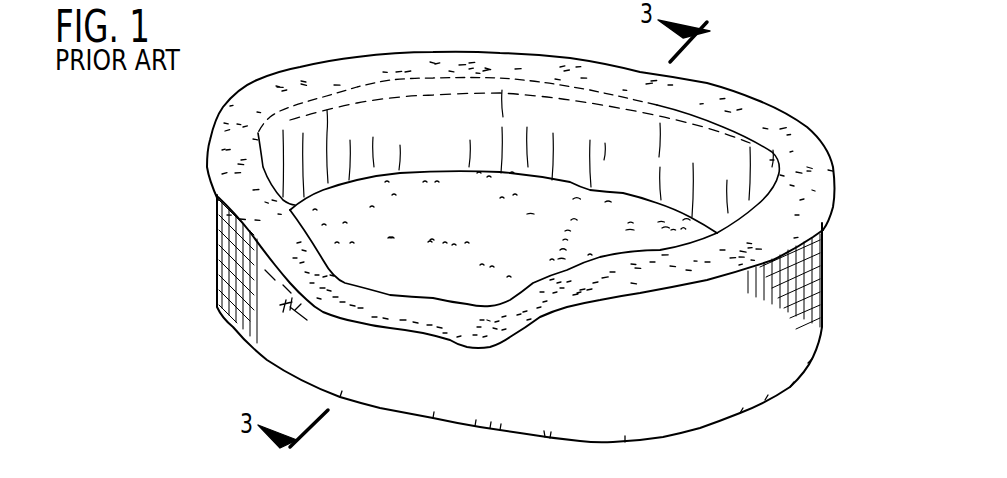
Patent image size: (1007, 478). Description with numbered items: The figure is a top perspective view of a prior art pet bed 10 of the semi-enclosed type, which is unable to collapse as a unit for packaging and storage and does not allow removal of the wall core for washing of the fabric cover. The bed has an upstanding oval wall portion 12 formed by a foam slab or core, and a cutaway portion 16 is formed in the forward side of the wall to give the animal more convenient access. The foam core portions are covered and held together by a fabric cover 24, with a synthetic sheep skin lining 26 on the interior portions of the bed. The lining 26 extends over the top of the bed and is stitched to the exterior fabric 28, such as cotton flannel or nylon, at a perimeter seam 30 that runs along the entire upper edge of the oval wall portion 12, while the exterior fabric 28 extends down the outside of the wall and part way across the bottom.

The pet bed 10 is at (185, 138).
The upstanding oval wall portion 12 is at (215, 230).
The cutaway portion 16 is at (447, 278).
The fabric cover 24 is at (657, 362).
The synthetic sheep skin lining 26 is at (407, 103).
The exterior fabric 28 is at (240, 292).
The perimeter seam 30 is at (258, 237).